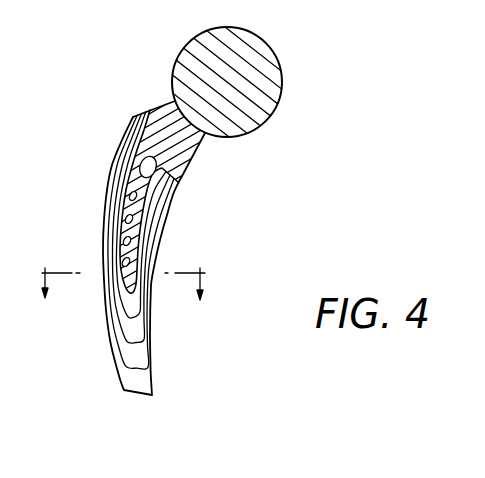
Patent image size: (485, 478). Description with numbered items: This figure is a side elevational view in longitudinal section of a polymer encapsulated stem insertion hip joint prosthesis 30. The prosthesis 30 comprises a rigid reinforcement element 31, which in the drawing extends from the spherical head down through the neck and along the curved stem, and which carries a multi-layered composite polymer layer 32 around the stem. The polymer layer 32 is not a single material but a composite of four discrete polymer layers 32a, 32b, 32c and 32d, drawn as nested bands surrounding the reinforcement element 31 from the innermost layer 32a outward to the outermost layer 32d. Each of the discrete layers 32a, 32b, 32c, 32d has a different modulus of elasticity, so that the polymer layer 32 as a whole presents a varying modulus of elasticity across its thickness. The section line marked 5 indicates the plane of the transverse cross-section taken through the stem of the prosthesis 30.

The stem insertion prosthesis 30 is at (104, 167).
The rigid reinforcement element 31 is at (142, 194).
The multi-layered composite polymer layer 32 is at (152, 363).
The polymer layer 32a is at (127, 290).
The polymer layer 32b is at (130, 326).
The polymer layer 32c is at (130, 353).
The polymer layer 32d is at (128, 383).
The section line 5- 5 is at (127, 295).